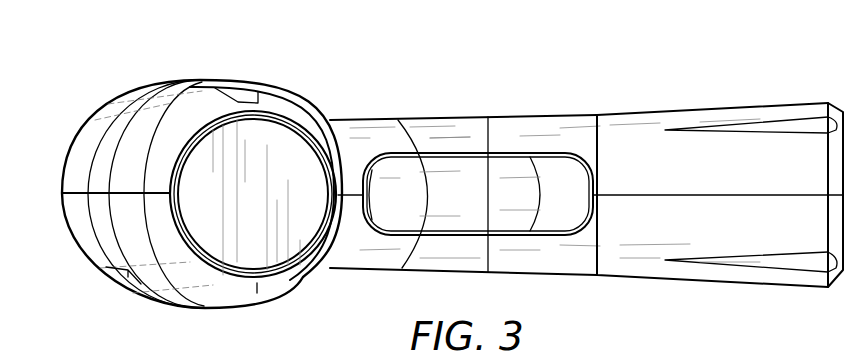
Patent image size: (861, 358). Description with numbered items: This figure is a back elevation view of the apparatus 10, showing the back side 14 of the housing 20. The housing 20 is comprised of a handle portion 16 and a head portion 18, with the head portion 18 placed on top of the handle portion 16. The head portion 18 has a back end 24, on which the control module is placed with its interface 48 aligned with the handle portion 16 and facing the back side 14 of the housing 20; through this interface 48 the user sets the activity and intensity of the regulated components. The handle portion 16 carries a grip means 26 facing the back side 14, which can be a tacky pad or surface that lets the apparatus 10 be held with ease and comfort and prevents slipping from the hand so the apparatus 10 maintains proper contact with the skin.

The apparatus 10 is at (280, 53).
The back side 14 is at (640, 262).
The handle portion 16 is at (677, 113).
The head portion 18 is at (92, 133).
The housing 20 is at (815, 108).
The back end 24 is at (237, 103).
The grip means 26 is at (523, 165).
The interface 48 is at (280, 138).